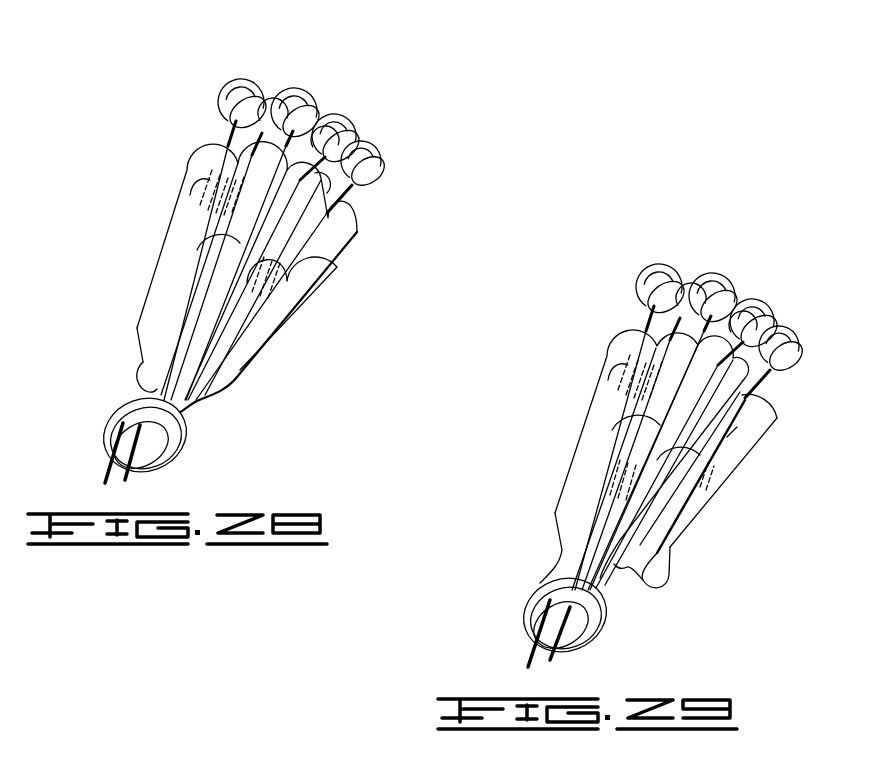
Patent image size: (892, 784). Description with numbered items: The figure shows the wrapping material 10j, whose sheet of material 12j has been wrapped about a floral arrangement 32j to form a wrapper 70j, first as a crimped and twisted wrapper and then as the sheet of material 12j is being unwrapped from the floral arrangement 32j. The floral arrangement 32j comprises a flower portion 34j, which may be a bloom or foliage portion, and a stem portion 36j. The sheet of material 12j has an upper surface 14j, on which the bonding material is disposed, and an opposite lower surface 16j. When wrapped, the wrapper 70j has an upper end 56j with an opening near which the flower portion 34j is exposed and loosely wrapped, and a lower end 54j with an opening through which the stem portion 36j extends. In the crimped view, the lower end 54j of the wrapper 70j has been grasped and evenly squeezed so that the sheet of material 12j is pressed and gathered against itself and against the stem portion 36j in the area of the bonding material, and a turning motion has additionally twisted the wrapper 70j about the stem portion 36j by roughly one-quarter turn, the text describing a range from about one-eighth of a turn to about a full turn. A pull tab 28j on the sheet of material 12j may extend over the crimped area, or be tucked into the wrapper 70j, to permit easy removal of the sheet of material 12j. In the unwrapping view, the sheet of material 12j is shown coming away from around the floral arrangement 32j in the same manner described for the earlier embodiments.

In FIG. 28, the wrapping material 10j is at (422, 68).
In FIG. 29, the wrapping material 10j is at (731, 215).
In FIG. 28, the sheet of material 12j is at (166, 228).
In FIG. 29, the sheet of material 12j is at (586, 416).
In FIG. 29, the upper surface 14j is at (747, 440).
In FIG. 28, the lower surface 16j is at (203, 167).
In FIG. 29, the lower surface 16j is at (625, 355).
In FIG. 28, the pull tab 28j is at (137, 370).
In FIG. 29, the pull tab 28j is at (667, 573).
In FIG. 28, the floral arrangement 32j is at (315, 87).
In FIG. 29, the floral arrangement 32j is at (737, 271).
In FIG. 28, the flower portion 34j is at (357, 130).
In FIG. 29, the flower portion 34j is at (760, 307).
In FIG. 28, the stem portion 36j is at (110, 463).
In FIG. 29, the stem portion 36j is at (528, 652).
In FIG. 28, the lower end 54j is at (163, 467).
In FIG. 28, the upper end 56j is at (350, 213).
In FIG. 28, the wrapper 70j is at (298, 310).
In FIG. 29, the wrapper 70j is at (727, 493).